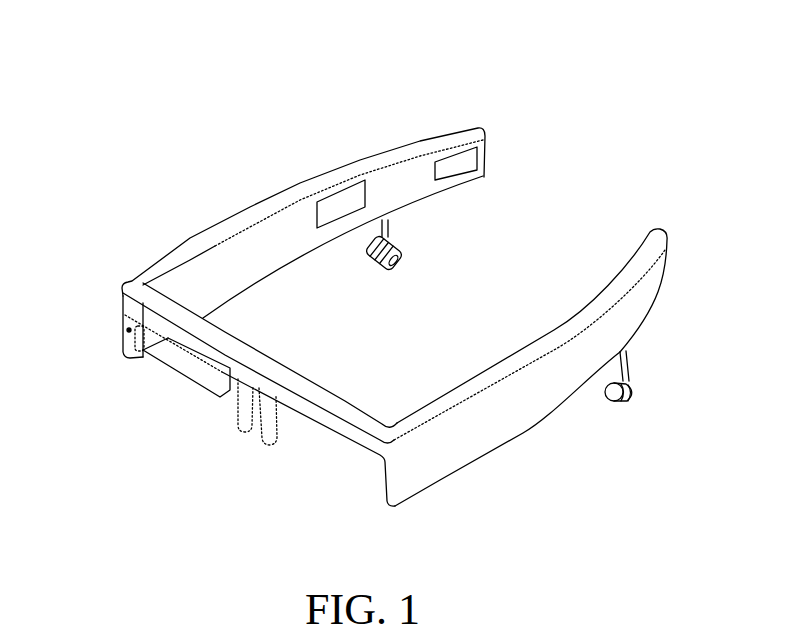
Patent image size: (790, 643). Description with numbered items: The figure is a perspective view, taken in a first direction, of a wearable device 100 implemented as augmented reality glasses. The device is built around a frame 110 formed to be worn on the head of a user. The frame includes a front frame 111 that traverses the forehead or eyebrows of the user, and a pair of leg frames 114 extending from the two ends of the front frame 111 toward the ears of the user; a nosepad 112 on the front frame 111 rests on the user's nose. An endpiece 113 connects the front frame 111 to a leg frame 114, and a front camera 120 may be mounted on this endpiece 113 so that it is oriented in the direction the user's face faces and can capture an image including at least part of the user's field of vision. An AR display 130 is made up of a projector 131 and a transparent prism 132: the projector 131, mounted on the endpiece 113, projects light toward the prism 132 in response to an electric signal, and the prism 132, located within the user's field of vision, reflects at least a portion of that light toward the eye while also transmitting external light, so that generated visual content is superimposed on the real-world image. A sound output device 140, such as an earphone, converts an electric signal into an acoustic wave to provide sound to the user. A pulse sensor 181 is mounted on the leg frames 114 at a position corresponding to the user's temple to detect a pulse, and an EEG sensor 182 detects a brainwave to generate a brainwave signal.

The wearable device 100 is at (172, 77).
The frame 110 is at (264, 352).
The front frame 111 is at (288, 433).
The nosepad 112 is at (241, 437).
The endpiece 113 is at (123, 315).
The leg frame 114 is at (250, 213).
The front camera 120 is at (128, 330).
The AR display 130 is at (184, 462).
The projector 131 is at (143, 367).
The transparent prism 132 is at (176, 378).
The sound output device 140 is at (406, 257).
The pulse sensor 181 is at (338, 200).
The EEG sensor 182 is at (465, 140).